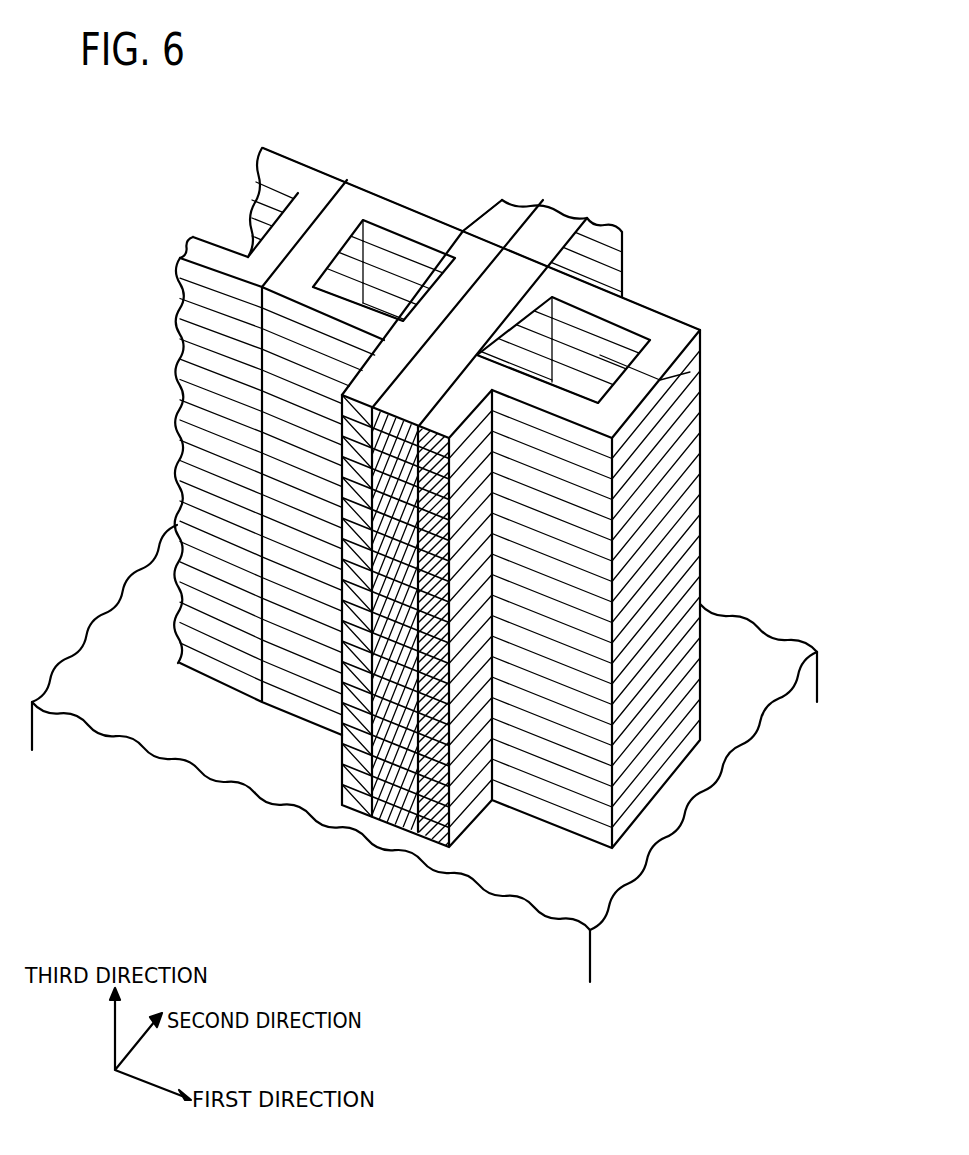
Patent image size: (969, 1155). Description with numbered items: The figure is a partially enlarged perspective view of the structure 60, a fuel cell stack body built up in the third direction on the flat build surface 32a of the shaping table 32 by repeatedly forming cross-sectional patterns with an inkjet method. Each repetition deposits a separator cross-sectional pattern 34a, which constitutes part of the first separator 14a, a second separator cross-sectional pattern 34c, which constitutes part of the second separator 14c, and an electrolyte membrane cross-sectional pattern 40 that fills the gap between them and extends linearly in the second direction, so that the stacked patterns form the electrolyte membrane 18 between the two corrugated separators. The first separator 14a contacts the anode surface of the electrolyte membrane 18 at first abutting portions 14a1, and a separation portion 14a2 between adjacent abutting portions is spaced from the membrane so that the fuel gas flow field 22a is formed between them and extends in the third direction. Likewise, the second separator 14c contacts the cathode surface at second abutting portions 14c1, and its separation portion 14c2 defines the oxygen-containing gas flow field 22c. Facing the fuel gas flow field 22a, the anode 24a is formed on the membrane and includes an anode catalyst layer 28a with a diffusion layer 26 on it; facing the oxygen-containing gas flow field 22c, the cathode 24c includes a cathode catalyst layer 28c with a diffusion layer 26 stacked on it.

The structure 60 is at (291, 140).
The separation portion 14a2 is at (645, 382).
The separation portion 14c2 is at (335, 232).
The second separator 14c is at (388, 215).
The cathode 24c is at (477, 106).
The diffusion layer 26 is at (520, 333).
The cathode catalyst layer 28c is at (465, 275).
The second abutting portion 14c1 is at (500, 185).
The electrolyte membrane 18 is at (560, 212).
The first abutting portion 14a1 is at (598, 213).
The first separator 14a is at (630, 295).
The anode catalyst layer 28a is at (520, 305).
The anode 24a is at (770, 310).
The oxygen-containing gas flow field 22c is at (375, 300).
The fuel gas flow field 22a is at (590, 387).
The separator cross-sectional pattern 34a is at (562, 775).
The separator cross-sectional pattern 34c is at (320, 675).
The electrolyte membrane cross-sectional pattern 40 is at (415, 787).
The build surface 32a is at (602, 883).
The shaping table 32 is at (424, 754).